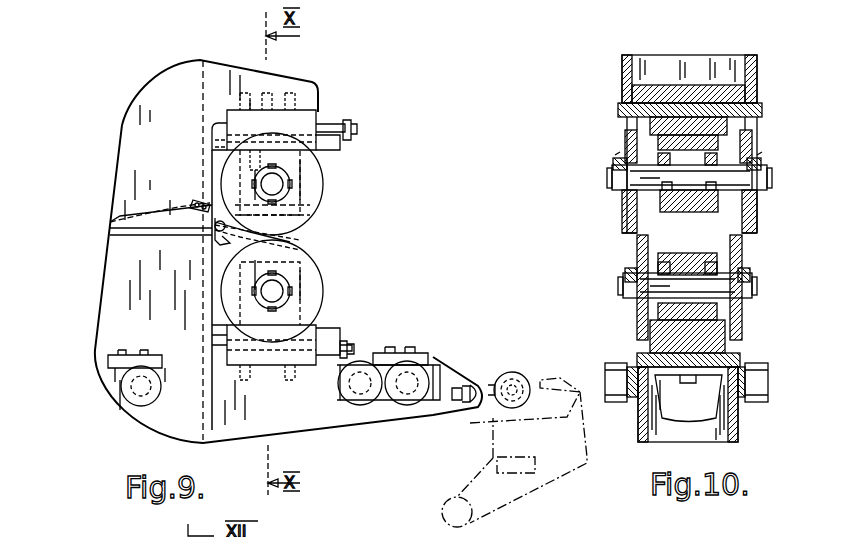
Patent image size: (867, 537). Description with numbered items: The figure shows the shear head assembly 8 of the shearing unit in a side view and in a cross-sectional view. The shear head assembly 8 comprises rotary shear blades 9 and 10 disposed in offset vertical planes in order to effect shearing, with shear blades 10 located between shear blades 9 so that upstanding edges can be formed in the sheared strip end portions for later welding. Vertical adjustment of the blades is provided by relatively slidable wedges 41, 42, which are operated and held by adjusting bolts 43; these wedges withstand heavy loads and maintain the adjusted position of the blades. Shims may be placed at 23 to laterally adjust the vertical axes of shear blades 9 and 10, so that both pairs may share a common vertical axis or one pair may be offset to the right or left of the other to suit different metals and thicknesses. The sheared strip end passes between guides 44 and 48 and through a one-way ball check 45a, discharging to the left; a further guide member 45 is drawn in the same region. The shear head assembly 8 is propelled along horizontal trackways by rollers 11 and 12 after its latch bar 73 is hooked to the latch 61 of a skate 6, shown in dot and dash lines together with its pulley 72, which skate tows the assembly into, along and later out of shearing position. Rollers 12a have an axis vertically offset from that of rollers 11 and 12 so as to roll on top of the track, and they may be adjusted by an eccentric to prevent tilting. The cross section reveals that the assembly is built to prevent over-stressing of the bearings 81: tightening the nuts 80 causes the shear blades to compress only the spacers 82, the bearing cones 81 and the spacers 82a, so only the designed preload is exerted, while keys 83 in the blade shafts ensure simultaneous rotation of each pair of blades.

In FIG. 9, the skate 6 is at (460, 463).
In FIG. 9, the shear head assembly 8 is at (113, 121).
In FIG. 10, the shear head assembly 8 is at (610, 62).
In FIG. 9, the rotary shear blades 9 is at (322, 187).
In FIG. 10, the rotary shear blades 9 is at (622, 205).
In FIG. 9, the rotary shear blades 10 is at (322, 270).
In FIG. 10, the rotary shear blades 10 is at (637, 320).
In FIG. 9, the rollers 11 is at (115, 390).
In FIG. 10, the rollers 11 is at (618, 363).
In FIG. 9, the rollers 12 is at (395, 405).
In FIG. 9, the rollers 12a is at (340, 385).
In FIG. 9, the shims 23 is at (215, 128).
In FIG. 9, the slidable wedge 41 is at (328, 122).
In FIG. 9, the slidable wedge 42 is at (212, 146).
In FIG. 9, the adjusting bolts 43 is at (352, 115).
In FIG. 9, the guide 44 is at (318, 220).
In FIG. 9, the guide member 45 is at (322, 243).
In FIG. 9, the one-way ball check 45a is at (200, 205).
In FIG. 9, the guide 48 is at (120, 216).
In FIG. 9, the latch 61 is at (470, 420).
In FIG. 9, the pulley 72 is at (520, 372).
In FIG. 9, the latch bar 73 is at (475, 385).
In FIG. 10, the nuts 80 is at (612, 162).
In FIG. 10, the bearings 81 is at (655, 158).
In FIG. 10, the spacers 82 is at (722, 140).
In FIG. 10, the spacers 82a is at (625, 148).
In FIG. 10, the keys 83 is at (612, 177).